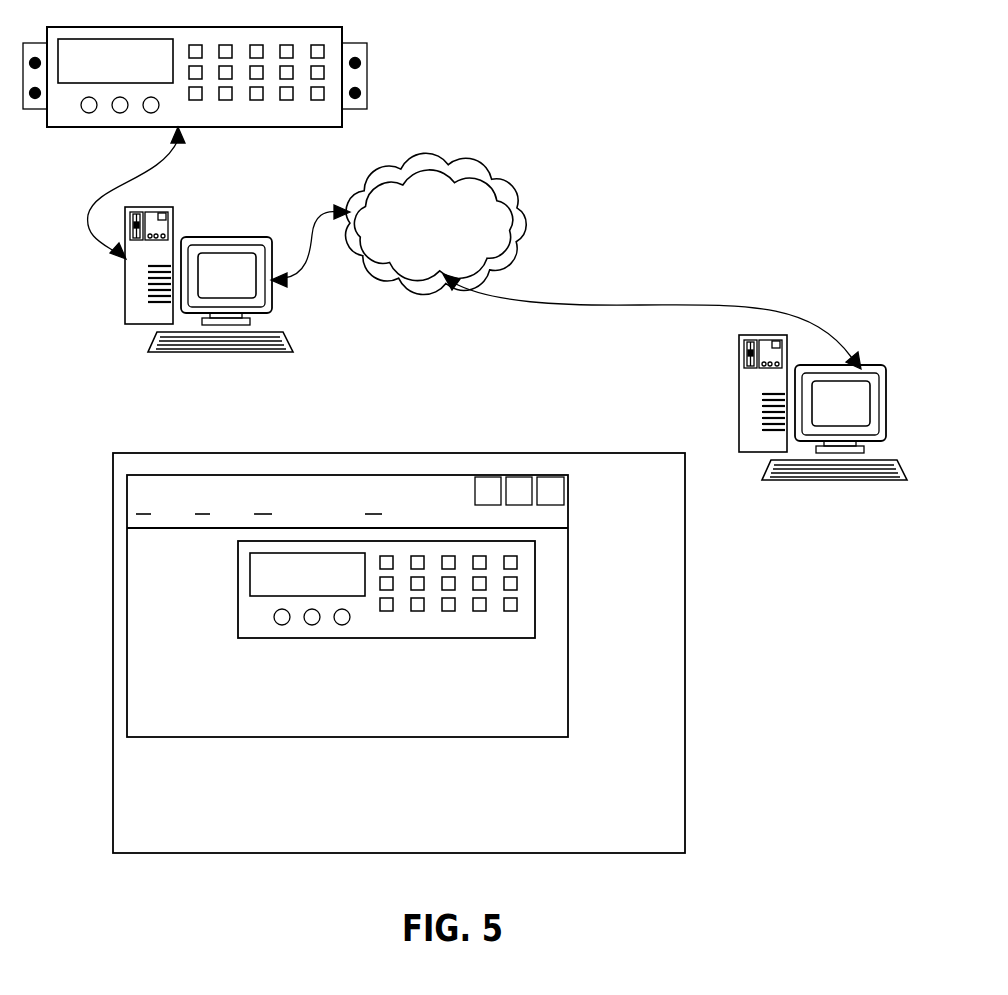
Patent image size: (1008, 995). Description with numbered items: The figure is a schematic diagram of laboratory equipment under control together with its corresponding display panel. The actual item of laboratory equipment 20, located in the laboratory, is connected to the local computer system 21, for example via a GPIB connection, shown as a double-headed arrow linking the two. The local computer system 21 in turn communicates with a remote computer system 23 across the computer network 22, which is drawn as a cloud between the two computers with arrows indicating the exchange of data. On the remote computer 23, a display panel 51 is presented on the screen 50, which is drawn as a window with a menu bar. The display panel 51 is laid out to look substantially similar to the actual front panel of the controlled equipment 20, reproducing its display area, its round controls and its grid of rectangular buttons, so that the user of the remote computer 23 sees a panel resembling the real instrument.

The item of laboratory equipment 20 is at (345, 114).
The local computer system 21 is at (271, 353).
The computer network 22 is at (517, 217).
The remote computer system 23 is at (824, 481).
The screen 50 is at (823, 412).
The display panel 51 is at (440, 639).